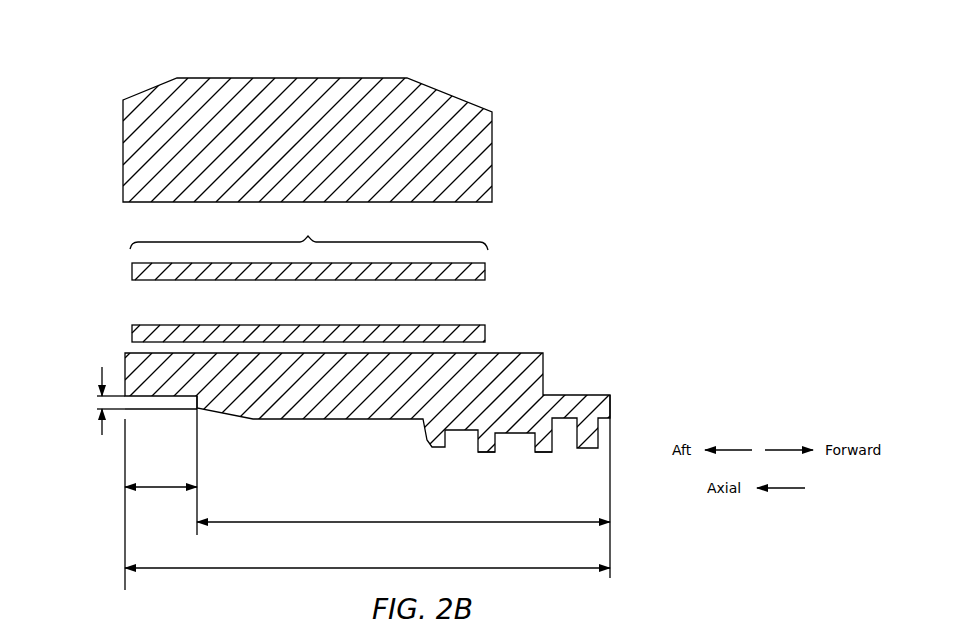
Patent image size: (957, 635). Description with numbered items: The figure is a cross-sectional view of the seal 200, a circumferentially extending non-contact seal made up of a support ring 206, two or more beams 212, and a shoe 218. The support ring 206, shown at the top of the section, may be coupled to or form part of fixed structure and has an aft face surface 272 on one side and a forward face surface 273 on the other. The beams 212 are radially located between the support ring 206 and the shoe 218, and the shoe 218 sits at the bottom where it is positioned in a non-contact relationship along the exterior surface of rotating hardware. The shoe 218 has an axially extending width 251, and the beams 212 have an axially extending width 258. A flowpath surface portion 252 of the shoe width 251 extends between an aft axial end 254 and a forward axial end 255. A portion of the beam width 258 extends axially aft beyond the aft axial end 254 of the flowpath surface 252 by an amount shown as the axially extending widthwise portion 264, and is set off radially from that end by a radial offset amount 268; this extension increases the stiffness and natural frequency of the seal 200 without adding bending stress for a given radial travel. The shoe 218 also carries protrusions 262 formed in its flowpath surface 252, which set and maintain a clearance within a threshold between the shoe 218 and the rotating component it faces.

The seal 200 is at (614, 112).
The support ring 206 is at (232, 98).
The beams 212 is at (485, 328).
The shoe 218 is at (544, 374).
The axially extending width of the shoe 251 is at (283, 567).
The flowpath surface portion 252 is at (308, 520).
The aft axial end 254 is at (190, 412).
The forward axial end 255 is at (617, 421).
The axially extending width of the beams 258 is at (309, 230).
The protrusions 262 is at (486, 453).
The axially extending widthwise portion 264 is at (165, 490).
The radial offset amount 268 is at (100, 377).
The aft face surface 272 is at (121, 103).
The forward face surface 273 is at (492, 150).